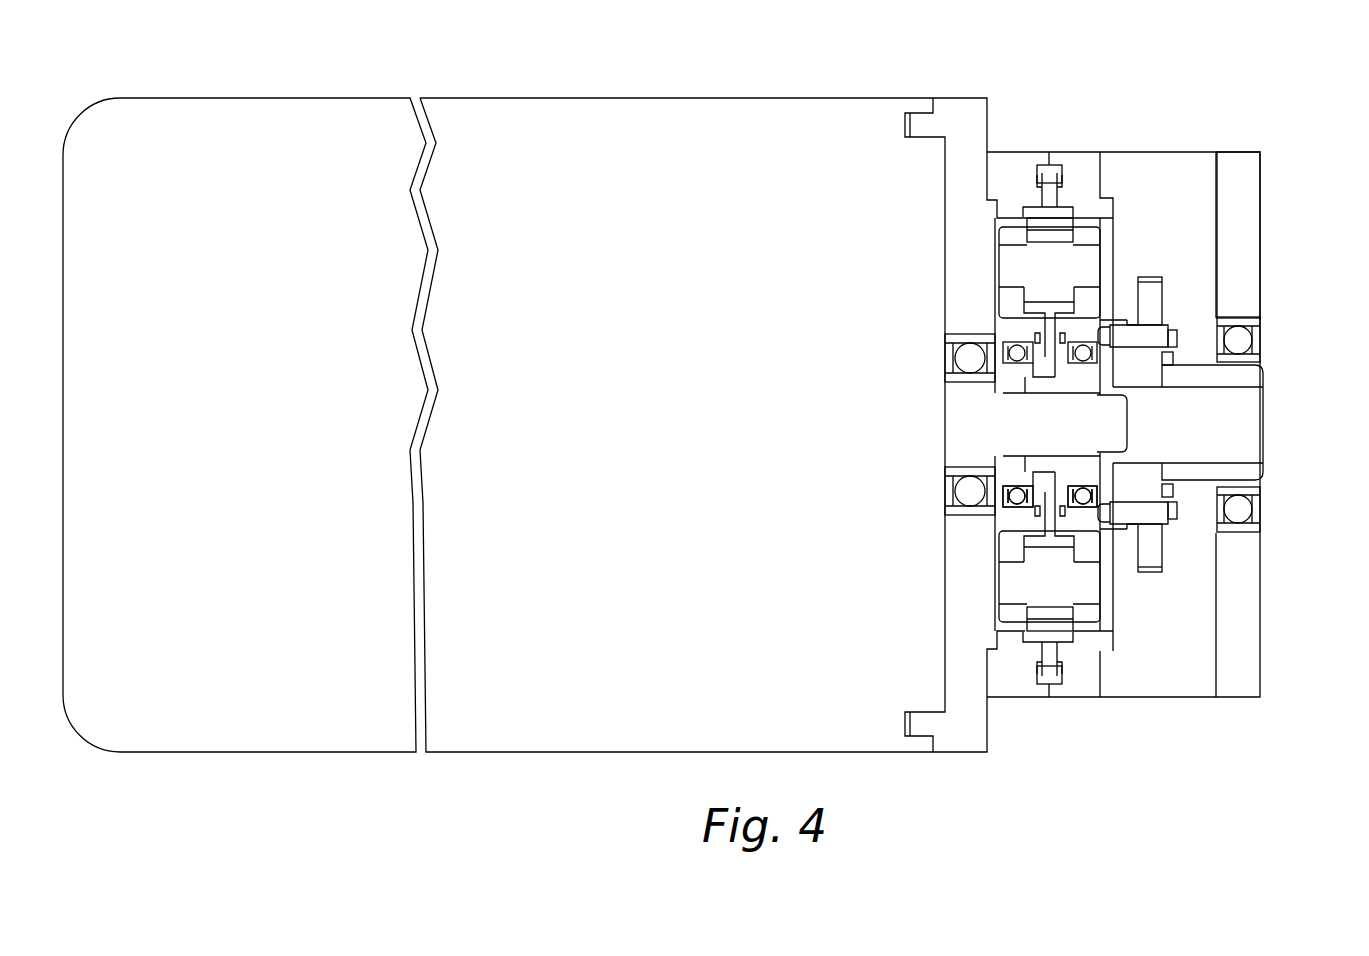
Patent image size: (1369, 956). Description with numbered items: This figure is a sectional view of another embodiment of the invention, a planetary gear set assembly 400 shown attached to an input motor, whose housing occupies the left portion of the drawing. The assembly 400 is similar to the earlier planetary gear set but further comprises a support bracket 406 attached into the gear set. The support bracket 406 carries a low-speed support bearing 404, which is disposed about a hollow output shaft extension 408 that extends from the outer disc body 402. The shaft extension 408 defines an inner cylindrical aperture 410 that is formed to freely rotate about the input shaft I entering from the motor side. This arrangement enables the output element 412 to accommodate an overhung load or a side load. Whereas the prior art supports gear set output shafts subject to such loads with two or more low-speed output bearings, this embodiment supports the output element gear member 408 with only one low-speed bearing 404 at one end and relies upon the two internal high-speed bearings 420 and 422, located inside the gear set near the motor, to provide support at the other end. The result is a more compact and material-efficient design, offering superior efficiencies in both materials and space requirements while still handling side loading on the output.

The planetary gear set assembly 400 is at (1228, 102).
The outer disc body 402 is at (1110, 573).
The low-speed support bearing 404 is at (1243, 340).
The support bracket 406 is at (1245, 229).
The hollow output shaft extension 408 is at (1232, 473).
The inner cylindrical aperture 410 is at (1218, 430).
The output element 412 is at (1152, 538).
The internal high-speed bearing 420 is at (1017, 496).
The internal high-speed bearing 422 is at (1082, 498).
The input shaft I is at (1070, 435).